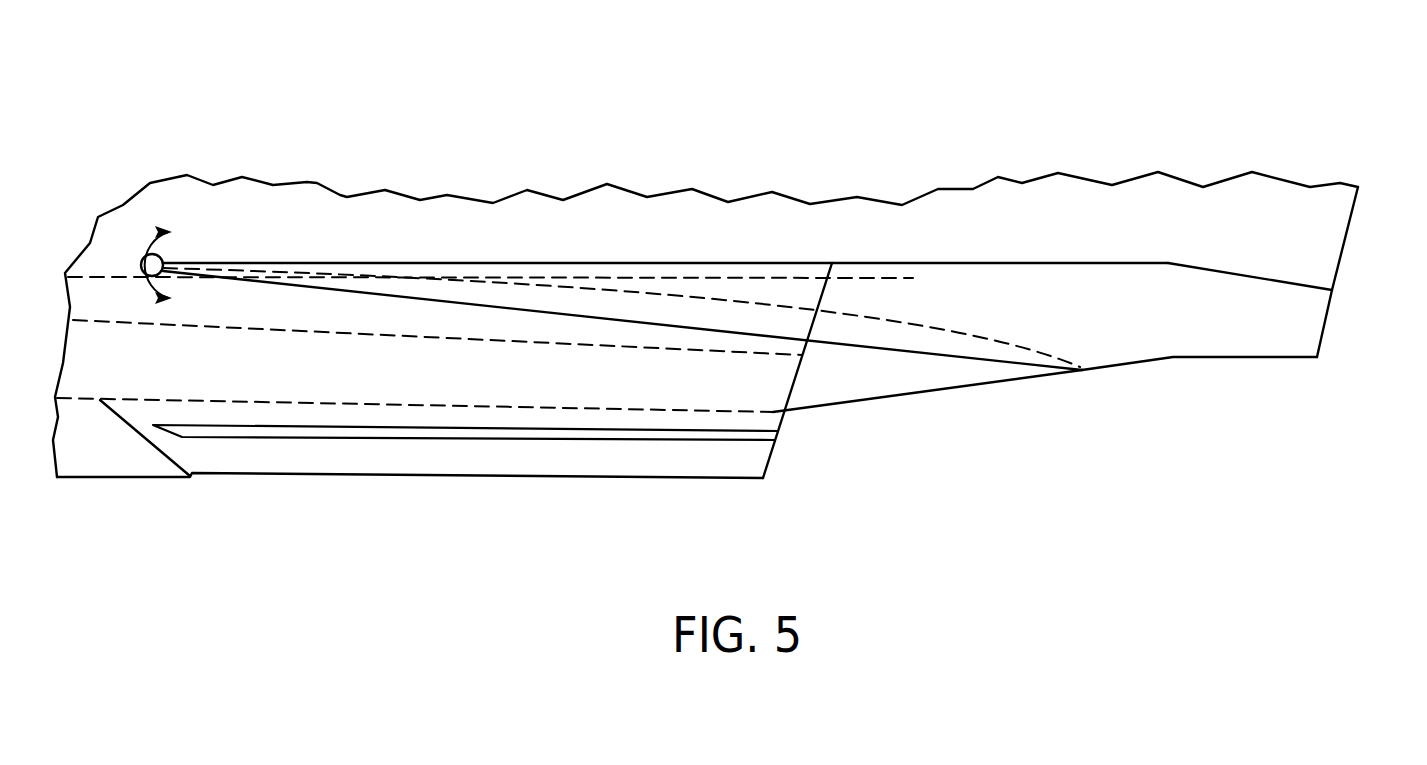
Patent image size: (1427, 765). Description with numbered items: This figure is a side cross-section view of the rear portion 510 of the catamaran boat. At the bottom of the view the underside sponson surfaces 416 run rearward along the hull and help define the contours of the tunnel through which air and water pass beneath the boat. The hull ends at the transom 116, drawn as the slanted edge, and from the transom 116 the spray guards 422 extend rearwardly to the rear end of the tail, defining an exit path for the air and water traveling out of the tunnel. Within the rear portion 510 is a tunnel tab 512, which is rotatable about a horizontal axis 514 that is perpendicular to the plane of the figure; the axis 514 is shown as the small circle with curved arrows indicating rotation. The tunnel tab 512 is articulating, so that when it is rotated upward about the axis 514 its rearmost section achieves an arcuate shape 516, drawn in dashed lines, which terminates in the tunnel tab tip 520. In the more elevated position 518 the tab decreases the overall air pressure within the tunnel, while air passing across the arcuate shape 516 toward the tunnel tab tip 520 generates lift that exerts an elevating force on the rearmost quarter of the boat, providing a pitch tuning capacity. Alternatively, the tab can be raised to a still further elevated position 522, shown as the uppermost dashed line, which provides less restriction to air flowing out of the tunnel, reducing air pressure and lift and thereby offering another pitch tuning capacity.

The rear portion 510 is at (705, 257).
The tunnel tab 512 is at (945, 358).
The horizontal axis 514 is at (160, 255).
The arcuate shape 516 is at (963, 328).
The more elevated position 518 is at (530, 292).
The tunnel tab tip 520 is at (1087, 385).
The still further elevated position 522 is at (870, 275).
The spray guards 422 is at (1327, 323).
The transom 116 is at (773, 455).
The underside sponson surfaces 416 is at (672, 478).